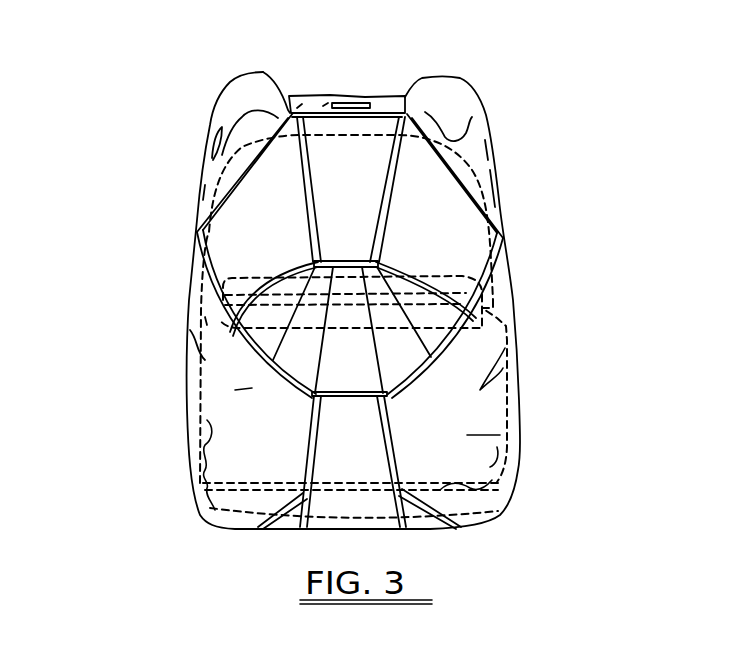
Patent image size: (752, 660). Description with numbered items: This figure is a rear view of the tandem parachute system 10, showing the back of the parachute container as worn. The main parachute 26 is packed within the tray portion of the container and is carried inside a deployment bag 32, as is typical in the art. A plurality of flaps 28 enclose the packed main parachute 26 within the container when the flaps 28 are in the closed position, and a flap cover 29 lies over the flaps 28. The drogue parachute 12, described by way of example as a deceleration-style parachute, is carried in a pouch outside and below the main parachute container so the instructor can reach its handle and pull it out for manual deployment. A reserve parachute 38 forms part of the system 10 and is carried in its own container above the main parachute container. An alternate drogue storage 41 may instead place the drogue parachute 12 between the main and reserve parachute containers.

The tandem parachute system 10 is at (497, 88).
The drogue parachute 12 is at (480, 503).
The main parachute 26 is at (240, 387).
The flaps 28 is at (433, 432).
The flap cover 29 is at (372, 451).
The deployment bag 32 is at (507, 337).
The reserve parachute 38 is at (503, 155).
The alternate drogue storage 41 is at (506, 287).